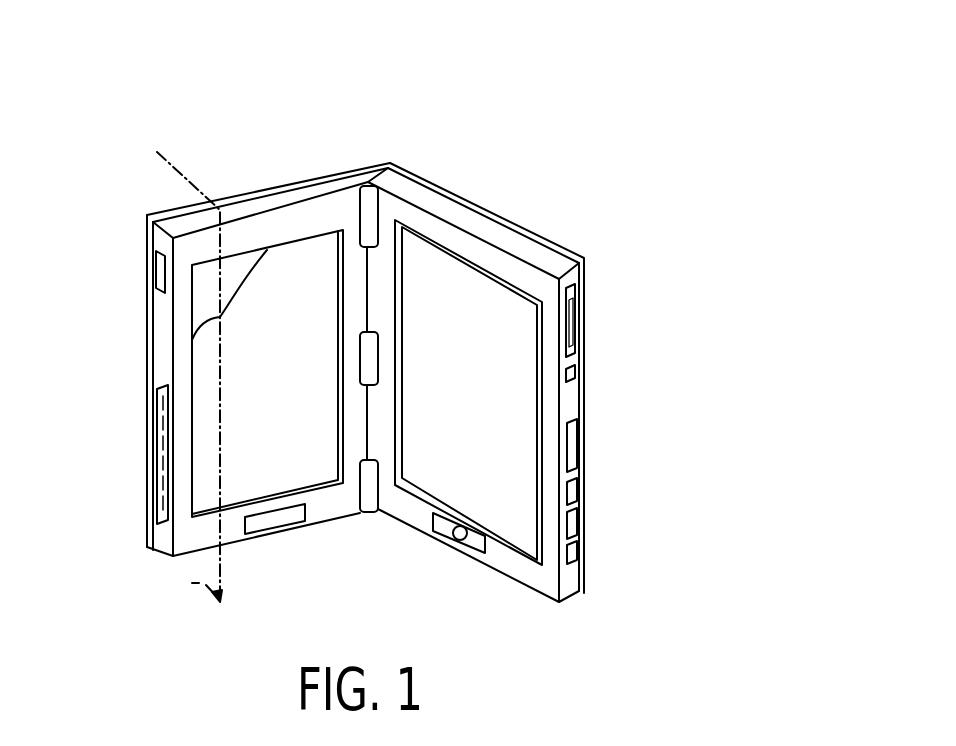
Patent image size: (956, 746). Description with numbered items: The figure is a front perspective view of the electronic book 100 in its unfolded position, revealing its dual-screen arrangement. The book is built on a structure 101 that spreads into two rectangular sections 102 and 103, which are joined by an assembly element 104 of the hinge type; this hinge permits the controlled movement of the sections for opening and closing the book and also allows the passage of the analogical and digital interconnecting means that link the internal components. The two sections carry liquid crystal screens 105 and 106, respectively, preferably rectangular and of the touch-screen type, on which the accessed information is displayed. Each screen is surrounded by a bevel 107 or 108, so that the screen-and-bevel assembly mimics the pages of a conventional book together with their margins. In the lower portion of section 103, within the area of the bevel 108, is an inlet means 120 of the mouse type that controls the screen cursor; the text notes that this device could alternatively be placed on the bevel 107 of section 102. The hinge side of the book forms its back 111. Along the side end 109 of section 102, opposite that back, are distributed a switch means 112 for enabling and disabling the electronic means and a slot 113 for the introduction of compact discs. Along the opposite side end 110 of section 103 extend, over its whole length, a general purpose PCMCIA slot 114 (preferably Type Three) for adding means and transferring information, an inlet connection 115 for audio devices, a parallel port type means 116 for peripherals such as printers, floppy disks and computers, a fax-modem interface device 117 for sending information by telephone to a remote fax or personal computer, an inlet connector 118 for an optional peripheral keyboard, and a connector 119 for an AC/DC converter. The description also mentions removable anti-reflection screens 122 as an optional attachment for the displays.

The electronic book 100 is at (360, 334).
The structure 101 is at (252, 205).
The rectangular section 102 is at (177, 555).
The rectangular section 103 is at (523, 583).
The assembly element 104 is at (360, 517).
The liquid crystal screen 105 is at (312, 253).
The liquid crystal screen 106 is at (427, 253).
The bevel 107 is at (182, 388).
The bevel 108 is at (508, 273).
The side end 109 is at (158, 352).
The side end 110 is at (570, 408).
The back 111 is at (365, 163).
The switch means 112 is at (152, 250).
The slot 113 is at (158, 463).
The PCMCIA slot 114 is at (577, 313).
The inlet connection 115 is at (580, 377).
The parallel port type means 116 is at (580, 447).
The fax-modem interface device 117 is at (580, 488).
The inlet connector 118 is at (580, 523).
The connector 119 is at (580, 557).
The inlet means 120 is at (457, 533).
The anti-reflection screen 122 is at (210, 290).